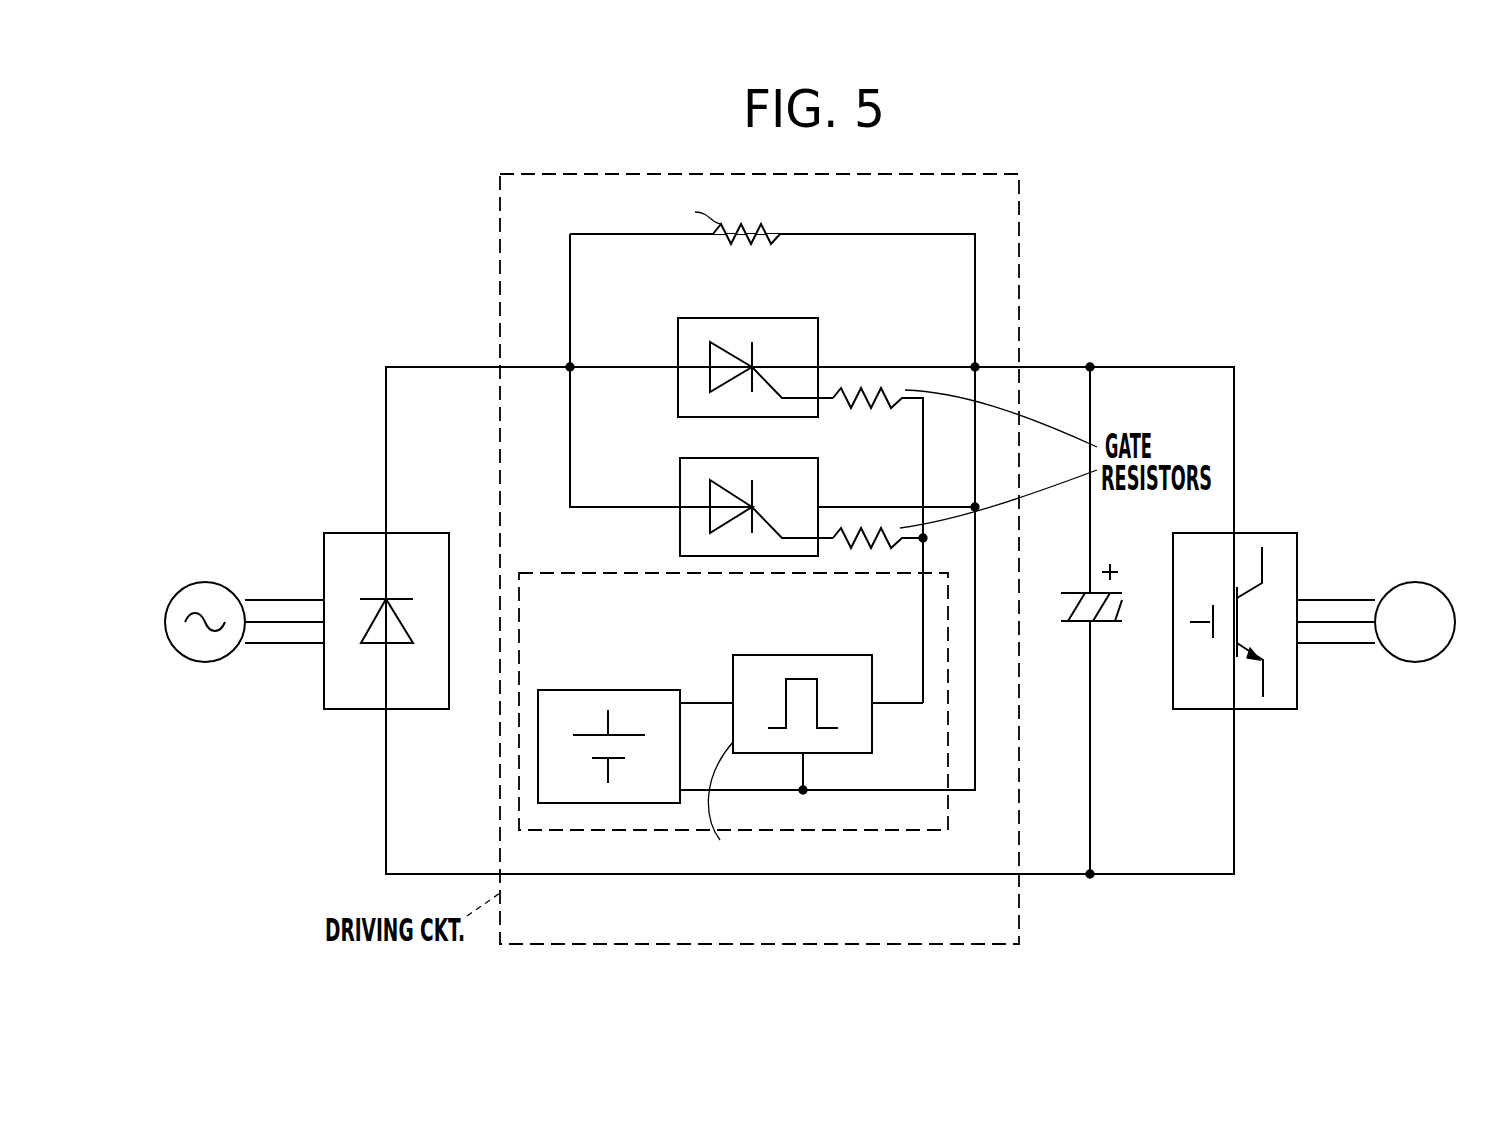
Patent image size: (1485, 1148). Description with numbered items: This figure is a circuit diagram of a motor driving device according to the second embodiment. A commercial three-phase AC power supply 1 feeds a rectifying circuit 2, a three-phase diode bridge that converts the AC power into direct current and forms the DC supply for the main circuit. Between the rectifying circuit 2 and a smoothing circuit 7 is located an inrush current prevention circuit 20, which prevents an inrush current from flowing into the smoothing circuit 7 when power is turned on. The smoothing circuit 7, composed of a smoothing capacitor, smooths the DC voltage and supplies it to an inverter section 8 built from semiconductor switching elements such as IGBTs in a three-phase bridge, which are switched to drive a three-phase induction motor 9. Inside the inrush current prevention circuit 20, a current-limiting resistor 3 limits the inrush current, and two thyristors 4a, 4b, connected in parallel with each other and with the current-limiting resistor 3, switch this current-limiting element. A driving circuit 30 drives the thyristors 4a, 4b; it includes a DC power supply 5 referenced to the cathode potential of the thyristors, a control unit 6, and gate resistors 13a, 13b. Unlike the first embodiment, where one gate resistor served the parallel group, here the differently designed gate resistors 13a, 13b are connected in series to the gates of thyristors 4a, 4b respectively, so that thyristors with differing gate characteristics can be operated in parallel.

The AC power supply 1 is at (205, 582).
The rectifying circuit 2 is at (352, 533).
The current-limiting resistor 3 is at (745, 245).
The thyristor 4a is at (678, 337).
The thyristor 4b is at (680, 477).
The DC power supply for inrush current prevention circuit 5 is at (608, 690).
The control unit for inrush current prevention circuit 6 is at (872, 735).
The smoothing circuit 7 is at (1072, 593).
The inverter section 8 is at (1275, 533).
The motor 9 is at (1415, 582).
The gate resistor 13a is at (887, 412).
The gate resistor 13b is at (887, 552).
The inrush current prevention circuit 20 is at (1019, 207).
The driving circuit for inrush current prevention circuit 30 is at (586, 573).